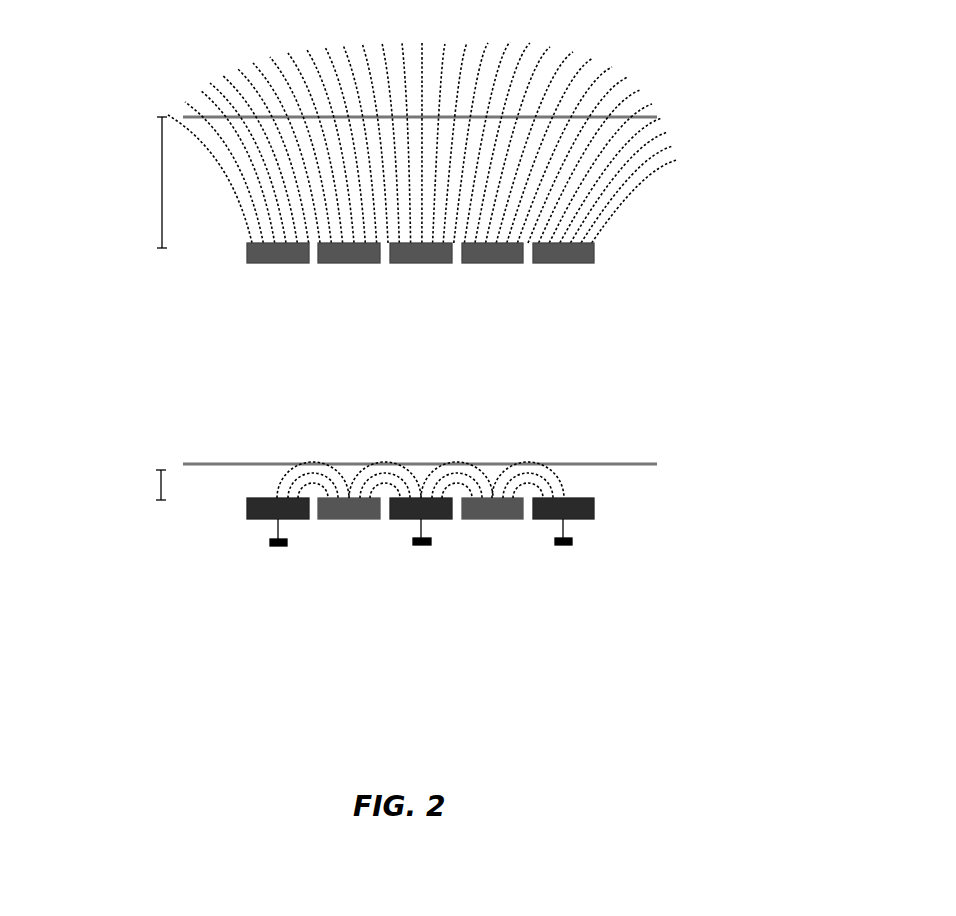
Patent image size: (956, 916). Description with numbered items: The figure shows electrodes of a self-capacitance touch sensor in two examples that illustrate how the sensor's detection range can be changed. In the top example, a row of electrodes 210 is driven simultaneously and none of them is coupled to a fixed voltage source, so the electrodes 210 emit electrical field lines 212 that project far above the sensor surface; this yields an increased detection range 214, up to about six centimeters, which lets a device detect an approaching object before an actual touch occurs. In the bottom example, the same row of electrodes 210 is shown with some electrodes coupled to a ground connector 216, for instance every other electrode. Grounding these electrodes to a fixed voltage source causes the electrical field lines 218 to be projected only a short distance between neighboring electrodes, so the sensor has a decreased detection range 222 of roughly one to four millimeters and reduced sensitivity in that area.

The electrodes 210 is at (245, 254).
The electrical field lines 212 is at (640, 167).
The detection range 214 is at (158, 190).
The ground connector 216 is at (547, 545).
The electrical field lines 218 is at (561, 469).
The detection range 222 is at (156, 481).